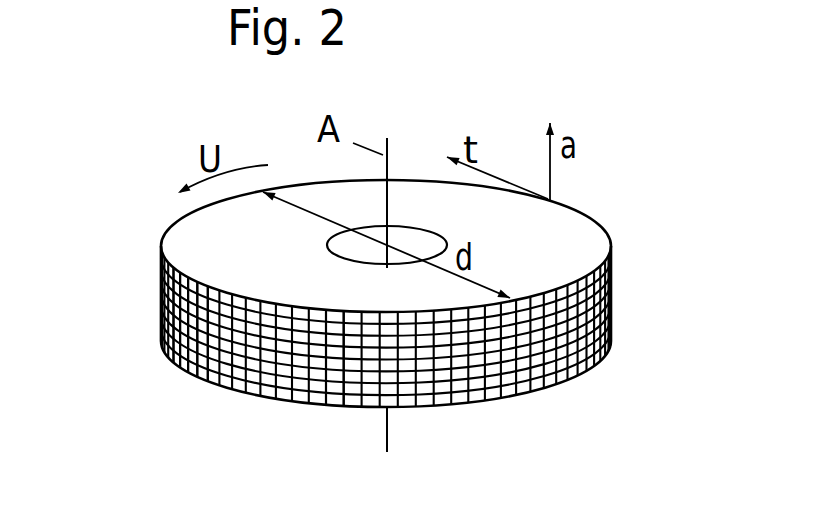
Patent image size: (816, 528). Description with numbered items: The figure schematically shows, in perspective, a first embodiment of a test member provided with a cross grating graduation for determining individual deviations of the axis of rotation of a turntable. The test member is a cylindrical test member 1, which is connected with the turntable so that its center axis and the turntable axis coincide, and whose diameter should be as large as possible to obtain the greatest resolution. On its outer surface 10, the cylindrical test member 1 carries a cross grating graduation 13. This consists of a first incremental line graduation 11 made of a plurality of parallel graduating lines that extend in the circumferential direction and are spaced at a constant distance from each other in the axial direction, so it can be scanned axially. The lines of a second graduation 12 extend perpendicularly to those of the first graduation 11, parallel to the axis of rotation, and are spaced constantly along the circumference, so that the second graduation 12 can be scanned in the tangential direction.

The cylindrical test member 1 is at (357, 338).
The outer surface 10 is at (335, 380).
The first incremental line graduation 11 is at (197, 348).
The second graduation 12 is at (237, 377).
The cross grating graduation 13 is at (340, 387).